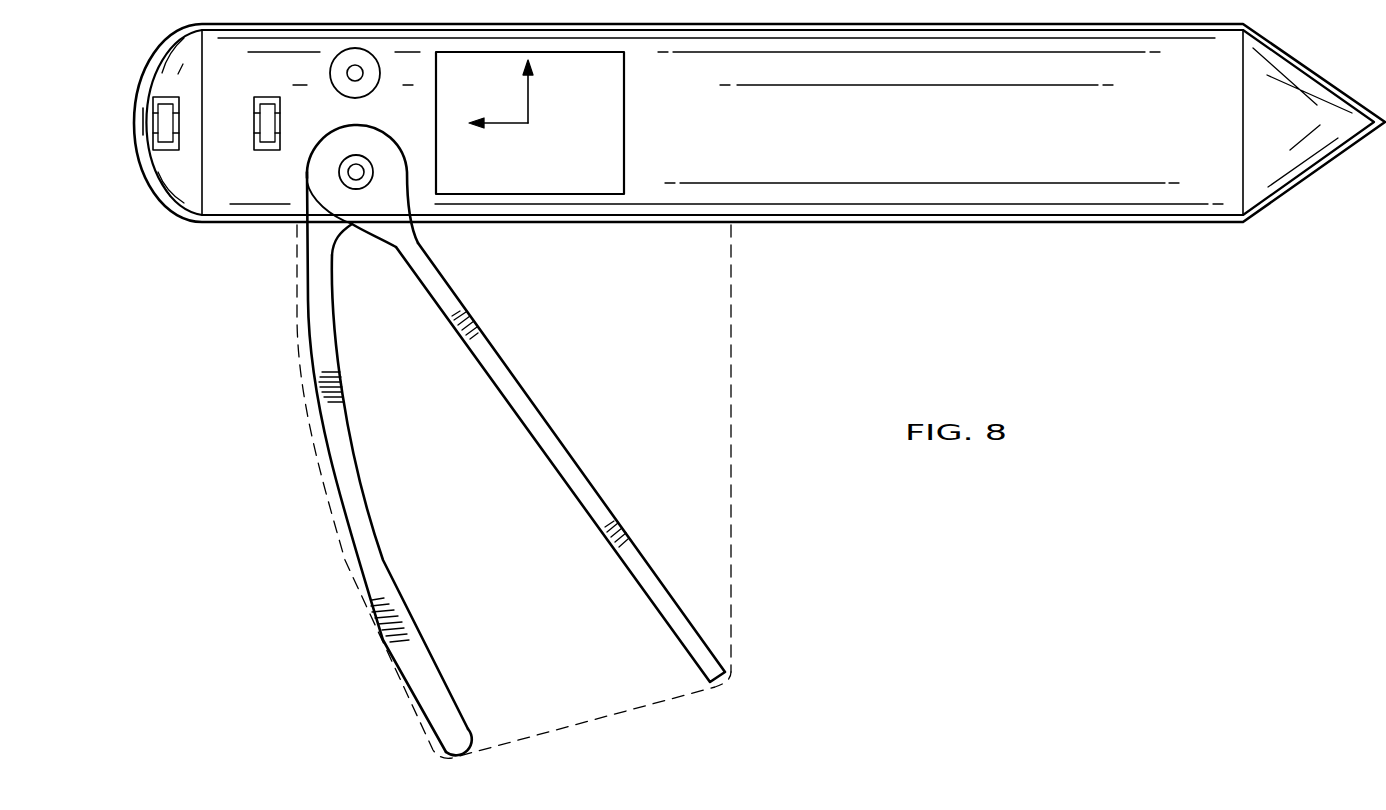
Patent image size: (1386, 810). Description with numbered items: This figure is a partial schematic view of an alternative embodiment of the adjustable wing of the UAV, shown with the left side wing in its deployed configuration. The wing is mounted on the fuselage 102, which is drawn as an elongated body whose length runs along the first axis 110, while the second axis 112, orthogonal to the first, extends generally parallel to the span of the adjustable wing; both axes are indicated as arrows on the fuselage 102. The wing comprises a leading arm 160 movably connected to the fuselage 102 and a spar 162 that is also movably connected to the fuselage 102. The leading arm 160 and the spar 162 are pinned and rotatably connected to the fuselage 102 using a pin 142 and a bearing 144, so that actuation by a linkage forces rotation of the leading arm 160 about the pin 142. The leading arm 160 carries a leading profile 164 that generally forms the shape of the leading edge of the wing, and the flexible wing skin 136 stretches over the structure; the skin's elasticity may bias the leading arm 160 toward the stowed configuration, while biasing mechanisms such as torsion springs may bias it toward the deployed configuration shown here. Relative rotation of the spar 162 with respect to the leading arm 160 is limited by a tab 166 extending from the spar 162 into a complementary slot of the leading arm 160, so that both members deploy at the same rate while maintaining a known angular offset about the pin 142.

The fuselage 102 is at (1017, 223).
The first axis 110 is at (503, 124).
The second axis 112 is at (530, 96).
The flexible wing skin 136 is at (733, 590).
The pin 142 is at (352, 182).
The bearing 144 is at (357, 163).
The leading arm 160 is at (506, 441).
The spar 162 is at (548, 435).
The leading profile 164 is at (368, 592).
The tab 166 is at (372, 502).